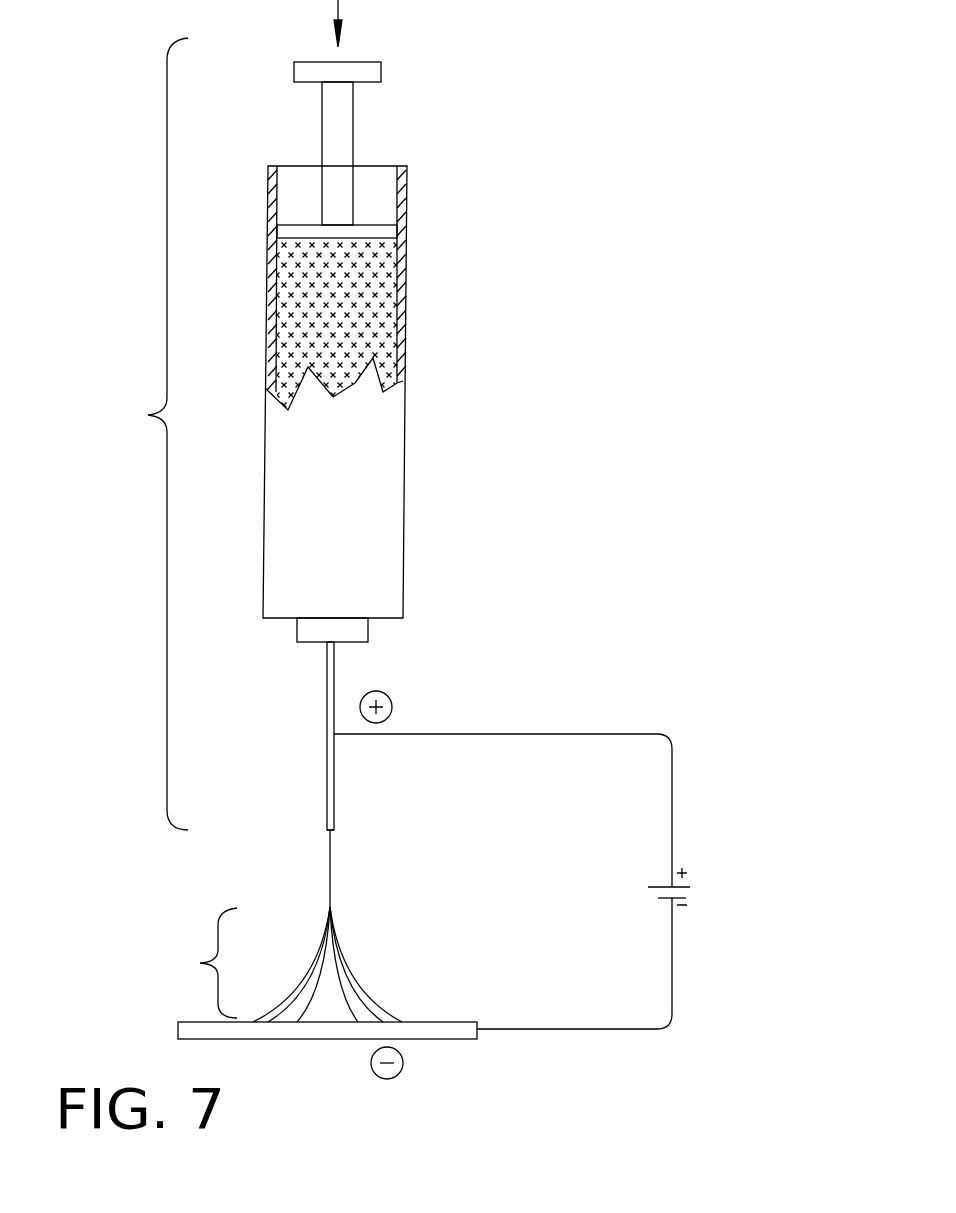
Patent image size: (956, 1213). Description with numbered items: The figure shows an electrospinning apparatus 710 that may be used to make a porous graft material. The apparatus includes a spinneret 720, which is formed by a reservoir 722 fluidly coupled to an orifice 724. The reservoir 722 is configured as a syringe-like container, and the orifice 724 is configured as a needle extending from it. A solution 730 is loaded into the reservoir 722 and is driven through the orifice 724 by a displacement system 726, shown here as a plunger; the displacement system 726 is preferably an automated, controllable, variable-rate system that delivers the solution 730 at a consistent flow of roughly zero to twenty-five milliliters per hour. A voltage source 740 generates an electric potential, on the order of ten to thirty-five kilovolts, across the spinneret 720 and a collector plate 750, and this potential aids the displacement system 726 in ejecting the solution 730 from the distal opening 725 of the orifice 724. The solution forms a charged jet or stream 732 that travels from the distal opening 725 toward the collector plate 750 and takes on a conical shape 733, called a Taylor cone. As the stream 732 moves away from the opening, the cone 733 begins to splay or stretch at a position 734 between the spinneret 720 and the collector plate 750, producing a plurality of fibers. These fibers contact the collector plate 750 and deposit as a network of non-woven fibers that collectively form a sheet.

The electrospinning apparatus 710 is at (452, 116).
The spinneret 720 is at (148, 415).
The reservoir 722 is at (405, 252).
The orifice 724 is at (335, 680).
The distal opening 725 is at (334, 842).
The displacement system 726 is at (355, 122).
The solution 730 is at (378, 337).
The charged jet or stream 732 is at (328, 875).
The conical shape 733 is at (200, 963).
The position 734 is at (340, 915).
The voltage source 740 is at (657, 874).
The collector plate 750 is at (178, 1031).